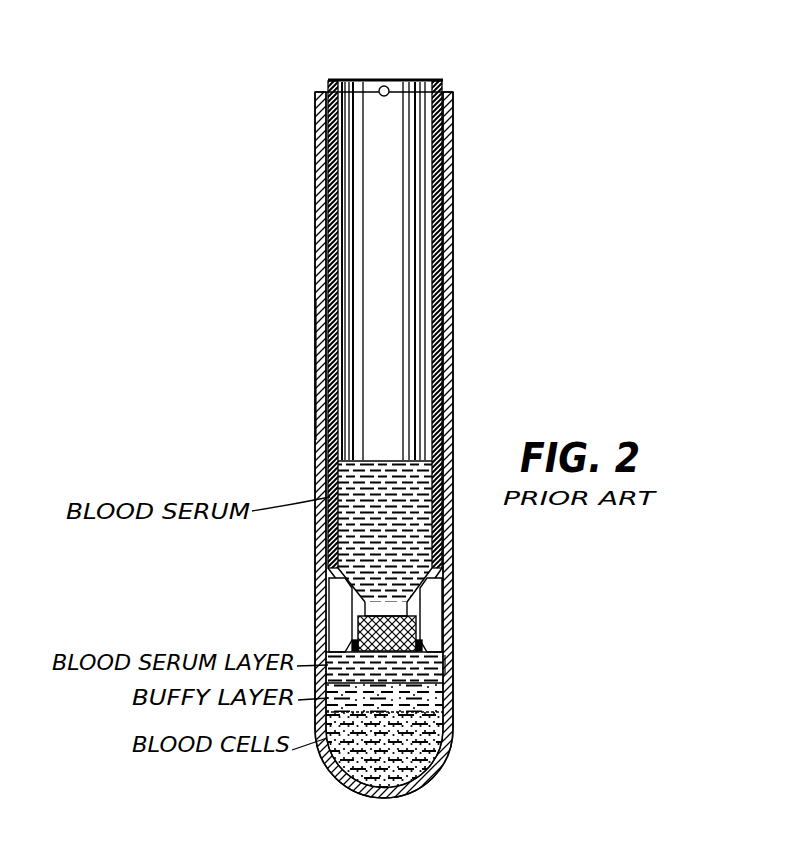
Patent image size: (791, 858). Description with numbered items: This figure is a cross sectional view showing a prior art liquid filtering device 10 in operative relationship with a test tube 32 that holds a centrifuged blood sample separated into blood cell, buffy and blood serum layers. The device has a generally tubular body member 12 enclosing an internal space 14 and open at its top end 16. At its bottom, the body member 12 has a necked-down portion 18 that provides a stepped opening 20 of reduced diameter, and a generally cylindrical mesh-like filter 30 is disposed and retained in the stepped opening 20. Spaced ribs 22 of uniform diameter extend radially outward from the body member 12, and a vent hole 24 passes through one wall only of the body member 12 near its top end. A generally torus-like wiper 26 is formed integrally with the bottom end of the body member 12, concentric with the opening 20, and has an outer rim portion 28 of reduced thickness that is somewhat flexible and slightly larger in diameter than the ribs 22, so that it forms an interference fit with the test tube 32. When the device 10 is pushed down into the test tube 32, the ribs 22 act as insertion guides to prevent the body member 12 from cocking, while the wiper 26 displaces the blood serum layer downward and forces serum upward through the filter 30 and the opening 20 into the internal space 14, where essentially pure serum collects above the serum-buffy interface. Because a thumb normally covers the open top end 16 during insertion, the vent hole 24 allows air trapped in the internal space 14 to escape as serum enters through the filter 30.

The liquid filtering device 10 is at (316, 588).
The tubular body member 12 is at (446, 242).
The internal space 14 is at (410, 308).
The open top end 16 is at (425, 79).
The necked-down portion 18 is at (425, 603).
The stepped opening 20 is at (410, 596).
The spaced ribs 22 is at (330, 205).
The vent hole 24 is at (384, 86).
The wiper 26 is at (451, 664).
The rim portion 28 is at (441, 638).
The filter 30 is at (397, 652).
The test tube 32 is at (322, 370).